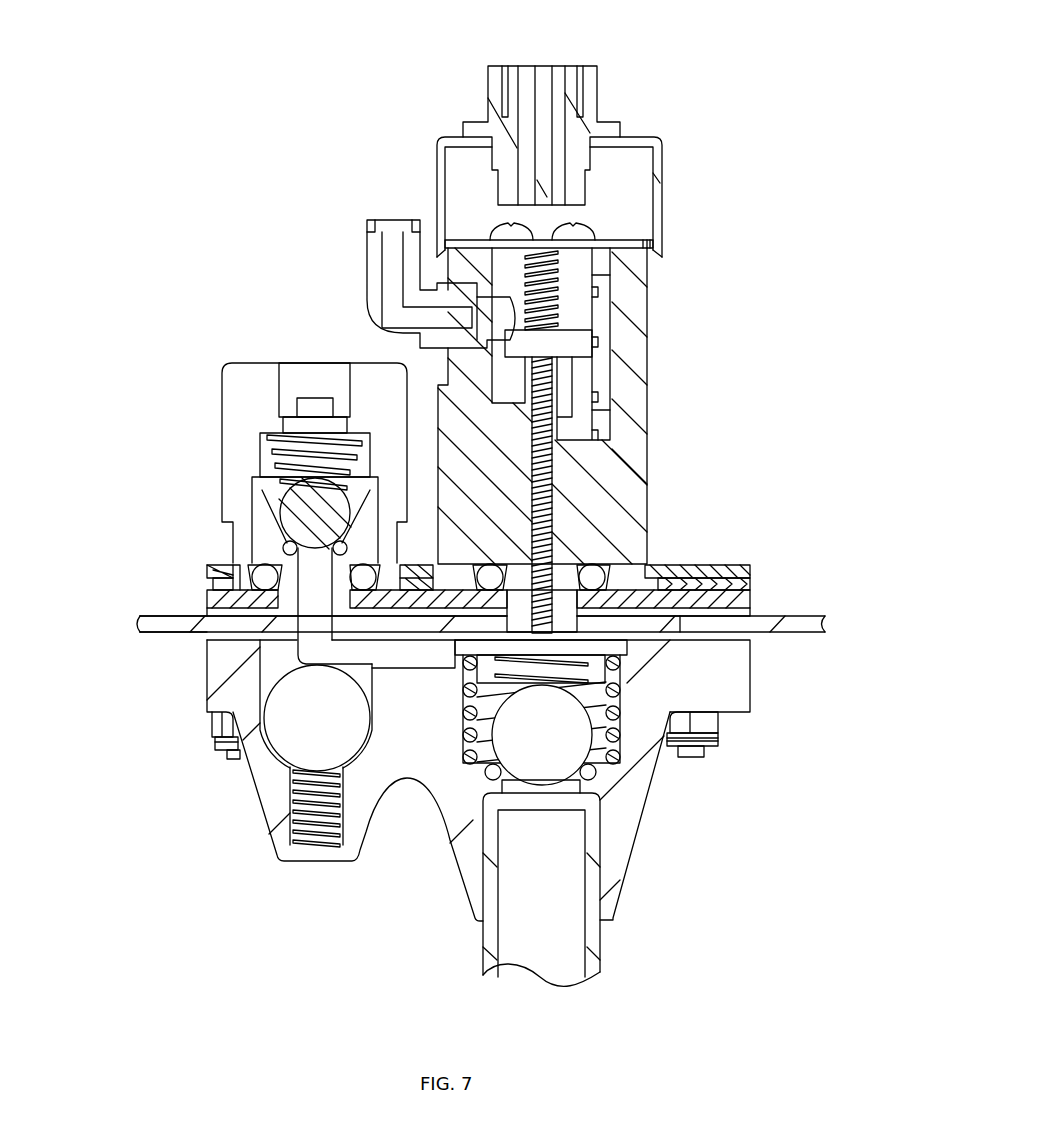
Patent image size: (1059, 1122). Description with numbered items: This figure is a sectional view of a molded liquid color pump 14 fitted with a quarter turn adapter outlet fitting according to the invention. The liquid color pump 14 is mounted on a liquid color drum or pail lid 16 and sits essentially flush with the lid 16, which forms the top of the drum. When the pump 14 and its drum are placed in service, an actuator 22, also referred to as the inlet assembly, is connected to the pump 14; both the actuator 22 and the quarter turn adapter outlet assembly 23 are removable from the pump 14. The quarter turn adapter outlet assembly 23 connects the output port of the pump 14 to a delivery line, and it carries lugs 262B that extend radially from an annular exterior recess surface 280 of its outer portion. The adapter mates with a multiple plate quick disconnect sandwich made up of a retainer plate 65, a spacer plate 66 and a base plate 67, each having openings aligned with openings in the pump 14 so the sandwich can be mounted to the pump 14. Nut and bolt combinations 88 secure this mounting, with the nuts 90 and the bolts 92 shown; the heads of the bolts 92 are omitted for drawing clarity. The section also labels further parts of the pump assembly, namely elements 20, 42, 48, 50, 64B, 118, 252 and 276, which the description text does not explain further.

The liquid color pump 14 is at (676, 82).
The actuator 22 is at (665, 378).
The quarter turn adapter outlet assembly 23 is at (203, 404).
The annular exterior recess surface 280 is at (227, 563).
The lugs 262B is at (210, 565).
The retainer plate 65 is at (210, 568).
The spacer plate 66 is at (207, 585).
The base plate 67 is at (207, 597).
The gasket layer 50 is at (165, 613).
The base sheet 48 is at (167, 632).
The liquid color drum or pail lid 16 is at (822, 620).
The plate portion 64B is at (762, 610).
The flange seal 276 is at (628, 585).
The body wall 252 is at (622, 515).
The threaded stem 42 is at (545, 495).
The spring housing 118 is at (557, 605).
The outlet tube 20 is at (617, 822).
The nut and bolt combination 88 is at (467, 799).
The nuts 90 is at (218, 725).
The bolts 92 is at (227, 755).